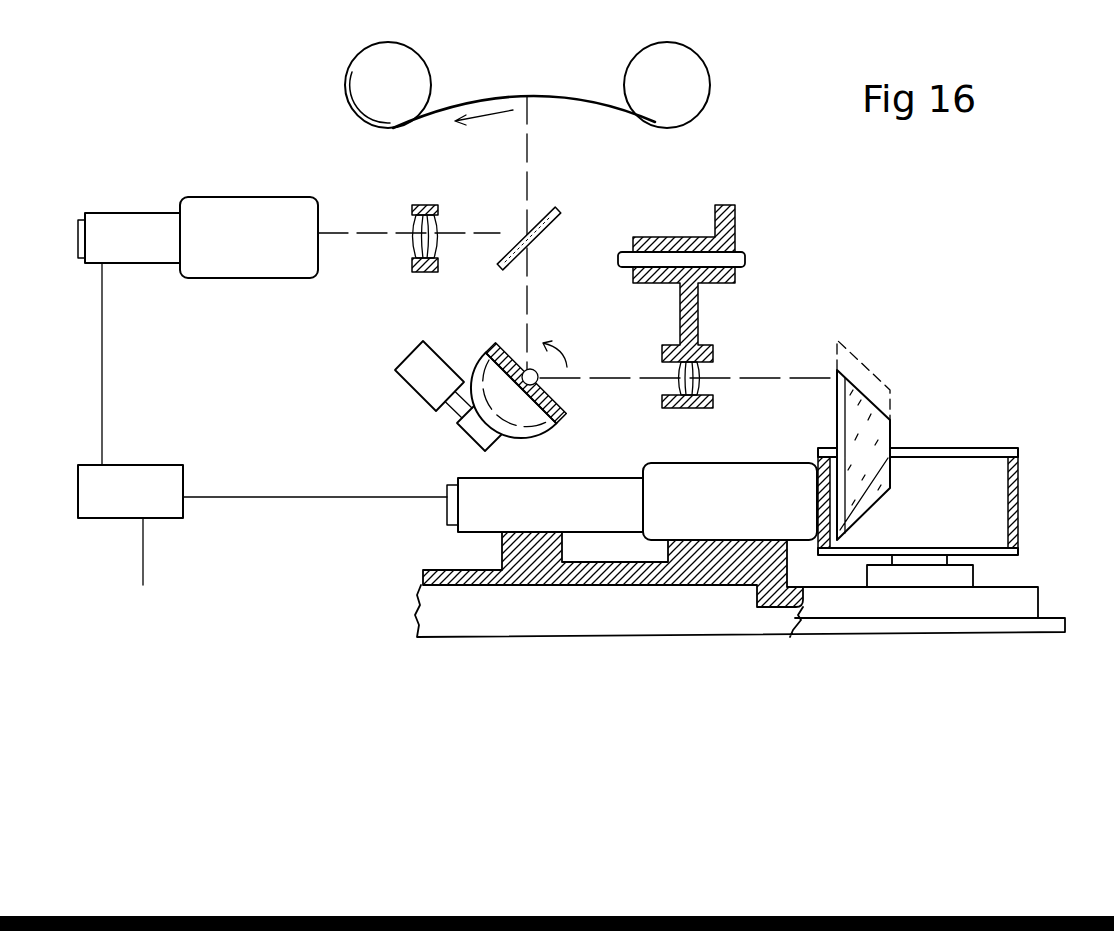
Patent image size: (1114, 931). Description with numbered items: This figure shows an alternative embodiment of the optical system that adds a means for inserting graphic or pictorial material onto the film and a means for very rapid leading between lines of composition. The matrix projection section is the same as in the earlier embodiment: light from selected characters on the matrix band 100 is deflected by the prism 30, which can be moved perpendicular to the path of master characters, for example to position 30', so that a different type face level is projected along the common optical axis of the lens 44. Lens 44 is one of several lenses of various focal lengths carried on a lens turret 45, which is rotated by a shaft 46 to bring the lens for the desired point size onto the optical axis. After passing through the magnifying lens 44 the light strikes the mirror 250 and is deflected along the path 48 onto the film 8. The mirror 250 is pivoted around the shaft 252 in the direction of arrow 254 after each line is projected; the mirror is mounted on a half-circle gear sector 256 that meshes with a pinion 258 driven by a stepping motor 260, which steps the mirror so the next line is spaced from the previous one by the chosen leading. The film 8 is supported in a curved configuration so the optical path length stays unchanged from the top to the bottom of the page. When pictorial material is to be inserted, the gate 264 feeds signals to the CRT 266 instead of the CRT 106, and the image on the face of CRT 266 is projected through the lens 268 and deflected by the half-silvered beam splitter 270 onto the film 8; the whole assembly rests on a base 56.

The film 8 is at (613, 108).
The optical axis 48 is at (527, 290).
The CRT 266 is at (281, 280).
The gate 264 is at (125, 452).
The lens 268 is at (415, 251).
The half-silvered beam splitter 270 is at (526, 236).
The stepping motor 260 is at (395, 375).
The pinion 258 is at (468, 436).
The half-circle gear sector 256 is at (490, 340).
The mirror 250 is at (550, 391).
The shaft 252 is at (543, 377).
The arrow 254 is at (556, 346).
The lens turret 45 is at (698, 312).
The shaft 46 is at (746, 253).
The lens 44 is at (703, 384).
The CRT 106 is at (775, 466).
The base 56 is at (553, 587).
The matrix band 100 is at (1018, 492).
The prism 30 is at (885, 455).
The prism position 30' is at (885, 380).